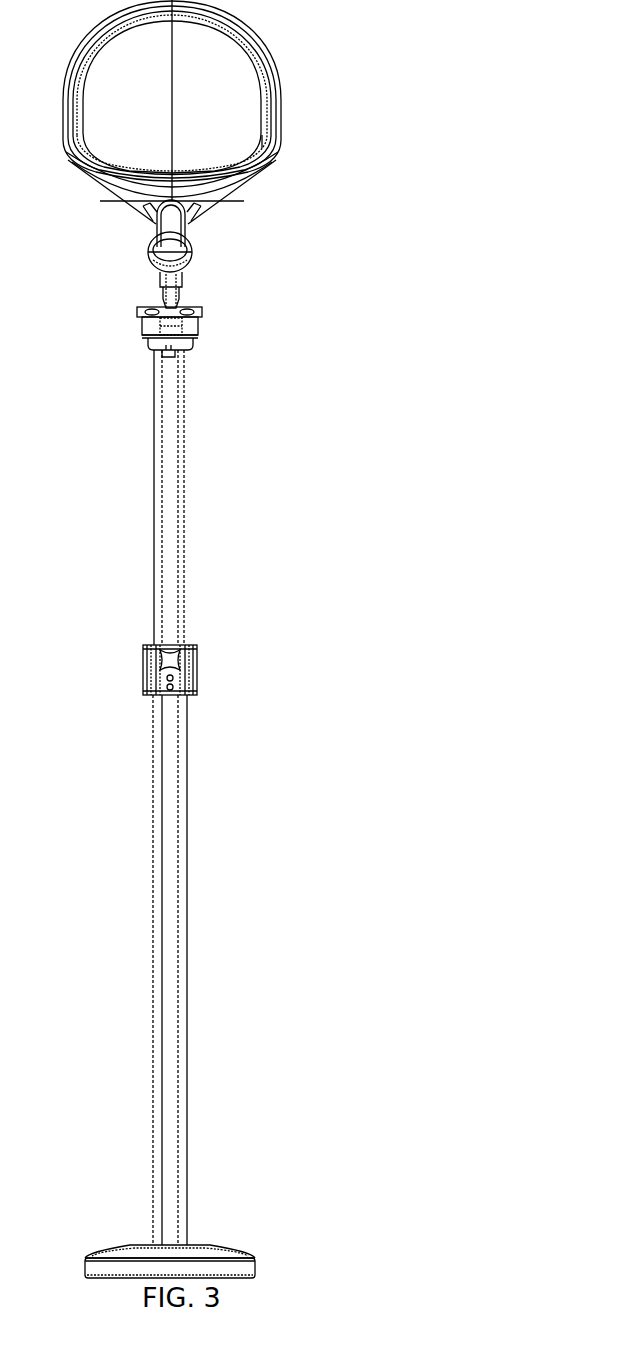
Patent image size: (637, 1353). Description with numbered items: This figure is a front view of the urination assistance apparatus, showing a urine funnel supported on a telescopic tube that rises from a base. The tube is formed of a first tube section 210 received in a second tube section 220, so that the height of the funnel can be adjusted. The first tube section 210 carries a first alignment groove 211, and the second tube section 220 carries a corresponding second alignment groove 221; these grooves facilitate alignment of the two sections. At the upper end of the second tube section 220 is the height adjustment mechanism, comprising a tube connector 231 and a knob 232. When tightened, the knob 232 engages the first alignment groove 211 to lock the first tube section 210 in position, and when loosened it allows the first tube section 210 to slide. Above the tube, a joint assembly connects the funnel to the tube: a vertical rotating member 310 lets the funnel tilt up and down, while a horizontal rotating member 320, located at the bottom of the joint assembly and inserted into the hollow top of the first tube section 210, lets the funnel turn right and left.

The first tube section 210 is at (184, 518).
The first alignment groove 211 is at (172, 462).
The second tube section 220 is at (187, 748).
The second alignment groove 221 is at (173, 867).
The tube connector 231 is at (197, 683).
The knob 232 is at (197, 664).
The vertical rotating member 310 is at (202, 311).
The horizontal rotating member 320 is at (198, 331).